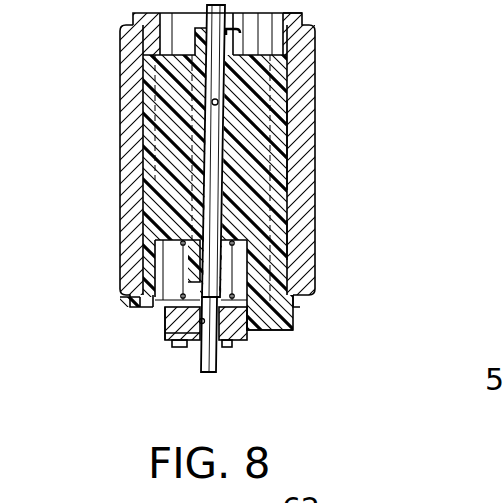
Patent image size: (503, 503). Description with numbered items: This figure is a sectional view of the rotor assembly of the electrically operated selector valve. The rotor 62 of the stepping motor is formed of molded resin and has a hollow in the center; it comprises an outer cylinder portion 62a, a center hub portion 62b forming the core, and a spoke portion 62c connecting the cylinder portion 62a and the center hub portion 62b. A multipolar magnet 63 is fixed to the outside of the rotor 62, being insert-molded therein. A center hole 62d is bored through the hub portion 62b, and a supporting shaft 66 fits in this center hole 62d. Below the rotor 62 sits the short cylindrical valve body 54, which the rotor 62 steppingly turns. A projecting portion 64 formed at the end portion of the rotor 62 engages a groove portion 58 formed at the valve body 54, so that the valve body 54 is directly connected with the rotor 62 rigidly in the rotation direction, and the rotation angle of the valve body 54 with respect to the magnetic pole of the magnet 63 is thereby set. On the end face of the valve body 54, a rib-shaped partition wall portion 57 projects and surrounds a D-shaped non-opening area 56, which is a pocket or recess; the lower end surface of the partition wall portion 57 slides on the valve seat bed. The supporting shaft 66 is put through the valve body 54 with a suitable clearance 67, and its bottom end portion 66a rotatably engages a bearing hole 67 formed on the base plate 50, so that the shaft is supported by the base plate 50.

The base plate 50 is at (234, 345).
The valve body 54 is at (161, 323).
The non-opening area 56 is at (183, 348).
The partition wall portion 57 is at (170, 343).
The groove portion 58 is at (254, 334).
The rotor 62 is at (298, 52).
The outer cylinder portion 62a is at (283, 124).
The center hub portion 62b is at (283, 240).
The spoke portion 62c is at (283, 160).
The center hole 62d is at (283, 106).
The multipolar magnet 63 is at (290, 200).
The projecting portion 64 is at (292, 318).
The supporting shaft 66 is at (212, 152).
The end portion of the supporting shaft 66a is at (210, 377).
The bearing hole 67 is at (173, 330).